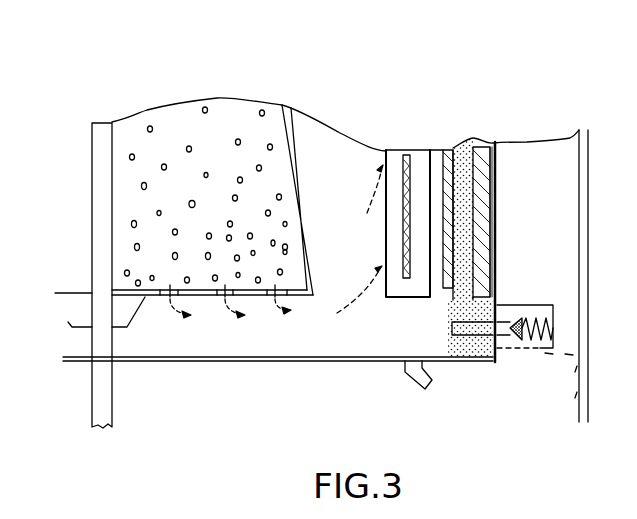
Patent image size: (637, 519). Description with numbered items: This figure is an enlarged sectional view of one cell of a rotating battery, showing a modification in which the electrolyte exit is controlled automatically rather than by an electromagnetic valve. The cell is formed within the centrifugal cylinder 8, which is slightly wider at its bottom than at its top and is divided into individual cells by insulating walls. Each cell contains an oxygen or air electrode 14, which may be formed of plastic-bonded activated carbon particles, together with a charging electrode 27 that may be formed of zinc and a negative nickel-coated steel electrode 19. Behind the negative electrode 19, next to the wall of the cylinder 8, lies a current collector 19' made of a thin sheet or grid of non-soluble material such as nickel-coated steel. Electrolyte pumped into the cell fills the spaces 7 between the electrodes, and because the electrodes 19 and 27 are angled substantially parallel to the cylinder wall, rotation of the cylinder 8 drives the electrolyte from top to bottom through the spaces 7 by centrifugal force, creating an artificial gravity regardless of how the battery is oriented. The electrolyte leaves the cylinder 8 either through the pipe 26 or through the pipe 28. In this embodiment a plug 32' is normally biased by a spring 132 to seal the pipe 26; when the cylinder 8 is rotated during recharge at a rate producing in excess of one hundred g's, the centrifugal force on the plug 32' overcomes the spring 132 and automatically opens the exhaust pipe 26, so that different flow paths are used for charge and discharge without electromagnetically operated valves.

The oxygen or air electrode 14 is at (395, 165).
The charging electrode 27 is at (446, 172).
The spaces between the electrodes 7 is at (464, 158).
The negative electrode 19 is at (509, 222).
The current collector 19' is at (513, 222).
The centrifugal cylinder 8 is at (497, 253).
The plug 32' is at (523, 303).
The spring 132 is at (538, 337).
The pipe 26 is at (467, 330).
The pipe 28 is at (418, 378).